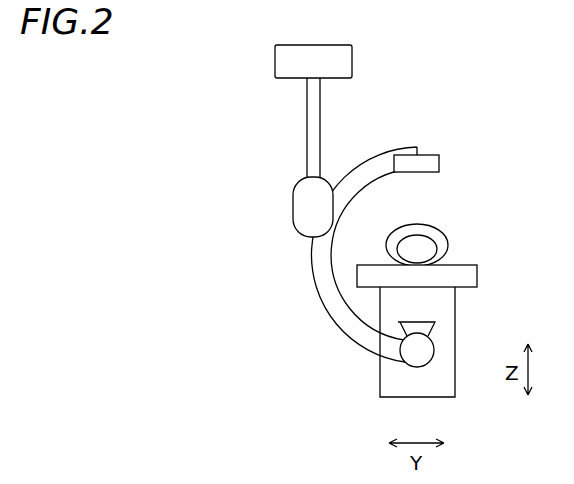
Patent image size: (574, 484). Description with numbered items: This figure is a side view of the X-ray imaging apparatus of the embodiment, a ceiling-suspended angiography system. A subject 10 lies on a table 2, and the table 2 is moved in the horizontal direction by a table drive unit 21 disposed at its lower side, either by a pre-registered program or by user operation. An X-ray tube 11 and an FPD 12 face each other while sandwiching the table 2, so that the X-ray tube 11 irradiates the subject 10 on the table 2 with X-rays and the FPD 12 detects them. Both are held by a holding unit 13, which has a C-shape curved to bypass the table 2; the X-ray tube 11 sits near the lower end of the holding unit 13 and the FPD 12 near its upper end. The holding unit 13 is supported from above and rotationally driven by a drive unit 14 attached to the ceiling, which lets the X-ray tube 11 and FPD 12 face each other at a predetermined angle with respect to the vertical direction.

The table 2 is at (478, 270).
The subject 10 is at (437, 229).
The X-ray tube 11 is at (434, 350).
The FPD (flat panel detector) 12 is at (439, 162).
The holding unit 13 is at (322, 290).
The drive unit 14 is at (302, 207).
The table drive unit 21 is at (456, 316).